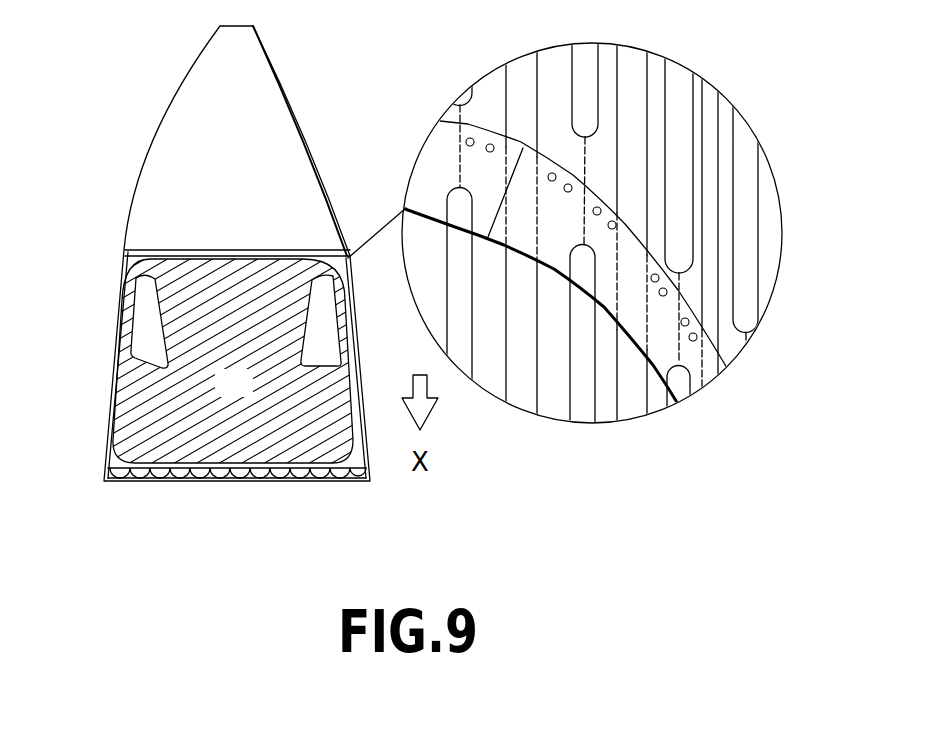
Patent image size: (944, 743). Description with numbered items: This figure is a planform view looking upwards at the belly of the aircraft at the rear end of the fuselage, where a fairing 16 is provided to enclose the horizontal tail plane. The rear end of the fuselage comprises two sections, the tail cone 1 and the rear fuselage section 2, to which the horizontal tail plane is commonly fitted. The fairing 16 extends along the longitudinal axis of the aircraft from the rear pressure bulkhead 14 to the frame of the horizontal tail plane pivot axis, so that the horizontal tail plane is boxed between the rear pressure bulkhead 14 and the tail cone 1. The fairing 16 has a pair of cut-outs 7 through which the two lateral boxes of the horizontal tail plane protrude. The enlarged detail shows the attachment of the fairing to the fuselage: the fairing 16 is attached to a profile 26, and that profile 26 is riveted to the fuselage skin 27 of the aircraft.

The tail cone 1 is at (163, 83).
The rear fuselage section 2 is at (103, 383).
The cut-outs 7 is at (145, 297).
The rear pressure bulkhead 14 is at (248, 483).
The fairing 16 is at (572, 466).
The profile 26 is at (663, 330).
The fuselage skin 27 is at (115, 453).